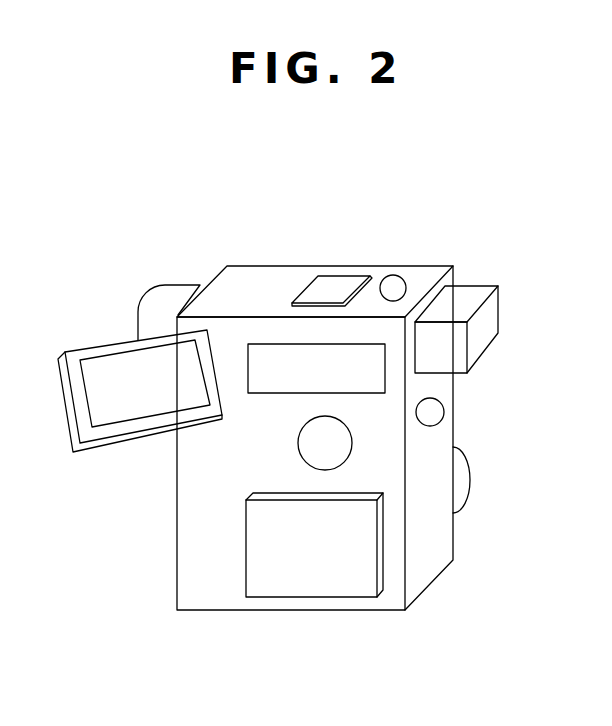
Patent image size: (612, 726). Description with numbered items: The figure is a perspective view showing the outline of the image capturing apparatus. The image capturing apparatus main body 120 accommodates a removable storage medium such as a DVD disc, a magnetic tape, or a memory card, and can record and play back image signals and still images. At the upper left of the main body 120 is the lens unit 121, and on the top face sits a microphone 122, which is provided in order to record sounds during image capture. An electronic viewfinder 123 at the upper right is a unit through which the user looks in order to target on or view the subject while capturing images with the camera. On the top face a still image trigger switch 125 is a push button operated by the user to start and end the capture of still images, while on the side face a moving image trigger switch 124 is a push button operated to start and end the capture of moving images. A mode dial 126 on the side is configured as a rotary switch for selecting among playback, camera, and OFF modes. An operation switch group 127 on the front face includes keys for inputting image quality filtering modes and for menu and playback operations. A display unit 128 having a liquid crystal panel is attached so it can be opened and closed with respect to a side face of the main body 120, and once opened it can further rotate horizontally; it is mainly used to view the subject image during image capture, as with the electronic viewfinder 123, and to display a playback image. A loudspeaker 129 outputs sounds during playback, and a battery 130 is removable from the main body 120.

The image capturing apparatus main body 120 is at (432, 582).
The lens unit 121 is at (183, 283).
The microphone 122 is at (333, 282).
The electronic viewfinder 123 is at (472, 285).
The moving image trigger switch 124 is at (445, 412).
The still image trigger switch 125 is at (398, 277).
The mode dial 126 is at (470, 478).
The operation switch group 127 is at (265, 343).
The display unit 128 is at (93, 358).
The loudspeaker 129 is at (300, 445).
The battery 130 is at (323, 594).